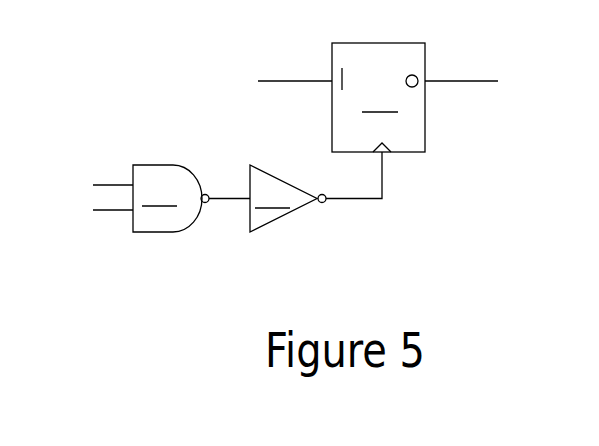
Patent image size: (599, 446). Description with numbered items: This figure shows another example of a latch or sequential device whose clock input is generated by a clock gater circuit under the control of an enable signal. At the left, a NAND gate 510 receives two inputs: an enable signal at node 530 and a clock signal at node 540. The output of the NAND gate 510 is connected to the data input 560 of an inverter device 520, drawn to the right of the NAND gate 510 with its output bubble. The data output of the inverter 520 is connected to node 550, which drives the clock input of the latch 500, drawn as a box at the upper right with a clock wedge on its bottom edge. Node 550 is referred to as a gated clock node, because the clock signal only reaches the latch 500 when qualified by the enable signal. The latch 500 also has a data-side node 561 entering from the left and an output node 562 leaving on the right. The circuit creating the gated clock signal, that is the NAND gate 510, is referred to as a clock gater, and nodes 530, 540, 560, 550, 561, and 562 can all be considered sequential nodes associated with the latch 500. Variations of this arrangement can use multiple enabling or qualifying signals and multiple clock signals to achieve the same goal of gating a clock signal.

The latch 500 is at (378, 97).
The NAND gate 510 is at (171, 198).
The inverter device 520 is at (288, 198).
The node 530 is at (123, 178).
The node 540 is at (120, 218).
The gated clock node 550 is at (387, 182).
The data input 560 is at (232, 192).
The sequential node 561 is at (280, 78).
The sequential node 562 is at (485, 77).